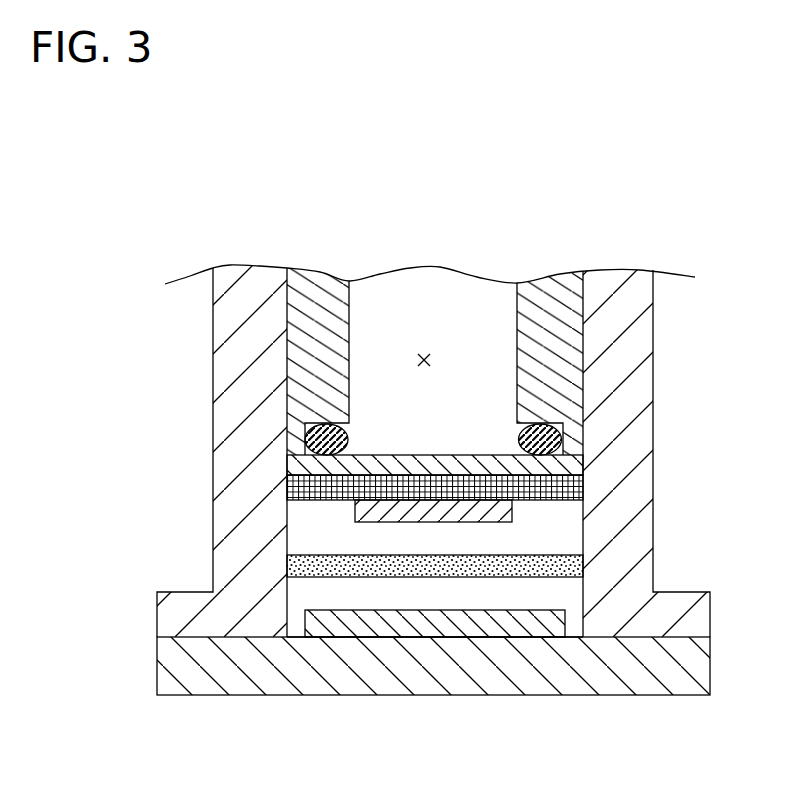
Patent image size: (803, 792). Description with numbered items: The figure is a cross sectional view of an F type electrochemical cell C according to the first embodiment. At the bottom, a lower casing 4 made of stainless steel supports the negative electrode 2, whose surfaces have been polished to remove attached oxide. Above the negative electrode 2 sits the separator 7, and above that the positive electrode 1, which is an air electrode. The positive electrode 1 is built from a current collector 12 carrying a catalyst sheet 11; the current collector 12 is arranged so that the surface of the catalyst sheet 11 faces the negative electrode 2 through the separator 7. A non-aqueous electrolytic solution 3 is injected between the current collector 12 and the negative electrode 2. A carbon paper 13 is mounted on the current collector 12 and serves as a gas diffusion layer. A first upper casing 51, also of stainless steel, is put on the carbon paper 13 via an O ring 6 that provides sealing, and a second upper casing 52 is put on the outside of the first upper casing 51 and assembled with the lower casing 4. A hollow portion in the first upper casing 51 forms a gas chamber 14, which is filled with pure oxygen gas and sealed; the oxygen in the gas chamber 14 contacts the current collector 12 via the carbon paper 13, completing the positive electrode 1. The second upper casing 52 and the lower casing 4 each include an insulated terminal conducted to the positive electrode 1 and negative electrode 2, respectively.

The F type electrochemical cell C is at (524, 217).
The positive electrode 1 is at (129, 352).
The catalyst sheet 11 is at (375, 515).
The current collector 12 is at (321, 502).
The carbon paper 13 is at (300, 468).
The gas chamber 14 is at (402, 358).
The negative electrode 2 is at (387, 625).
The non-aqueous electrolytic solution 3 is at (523, 598).
The lower casing 4 is at (240, 667).
The O ring 6 is at (566, 438).
The separator 7 is at (565, 552).
The first upper casing 51 is at (565, 325).
The second upper casing 52 is at (640, 400).